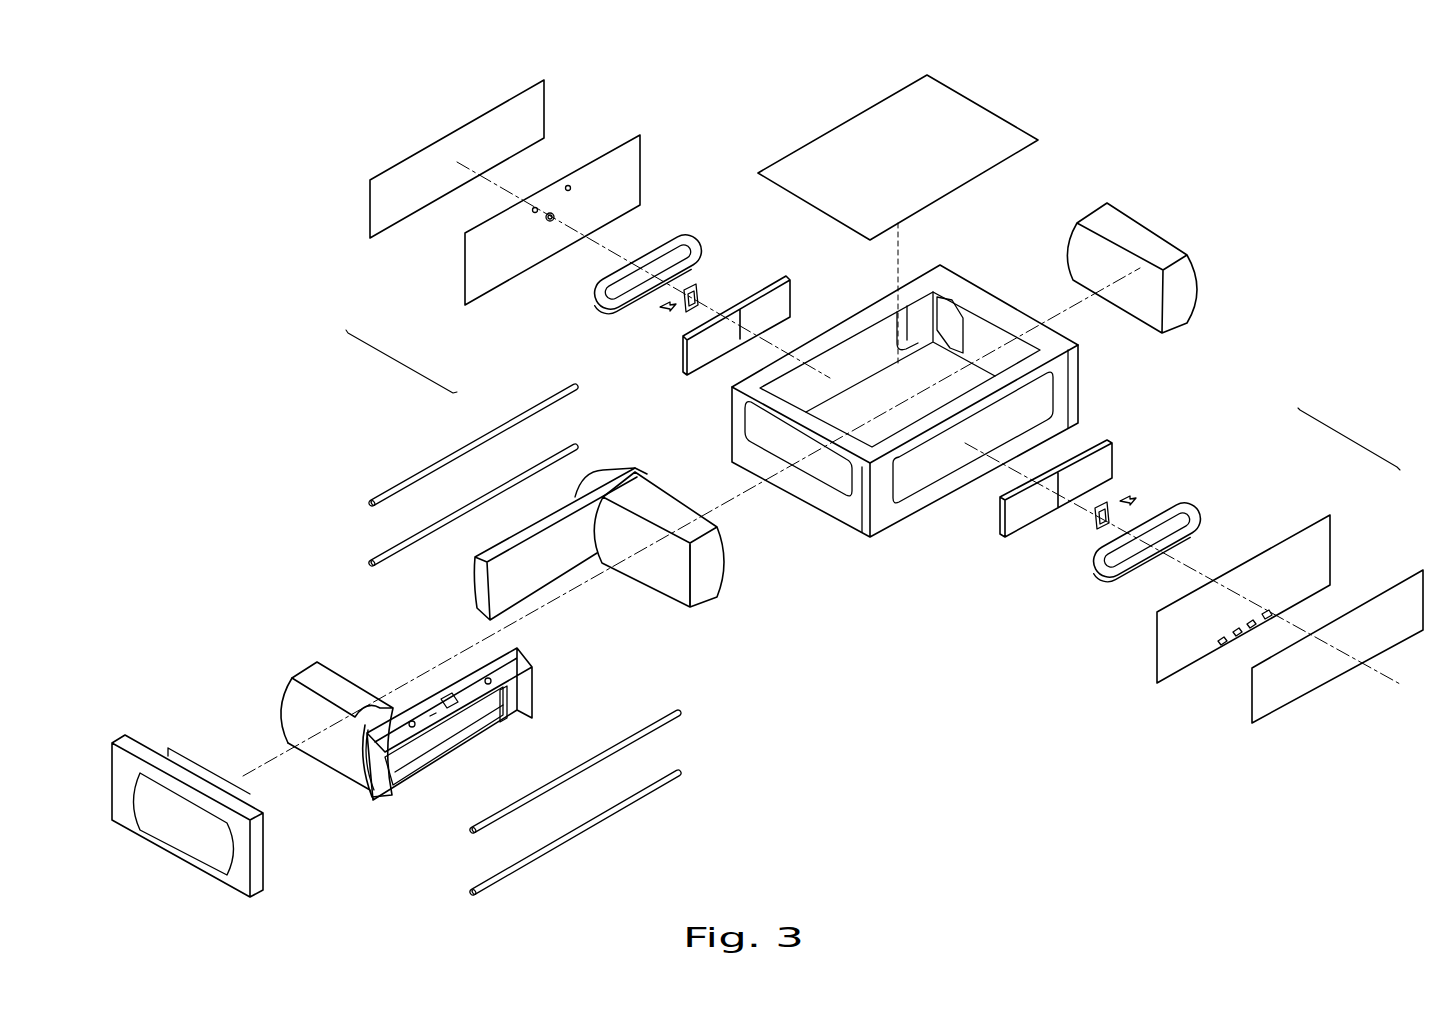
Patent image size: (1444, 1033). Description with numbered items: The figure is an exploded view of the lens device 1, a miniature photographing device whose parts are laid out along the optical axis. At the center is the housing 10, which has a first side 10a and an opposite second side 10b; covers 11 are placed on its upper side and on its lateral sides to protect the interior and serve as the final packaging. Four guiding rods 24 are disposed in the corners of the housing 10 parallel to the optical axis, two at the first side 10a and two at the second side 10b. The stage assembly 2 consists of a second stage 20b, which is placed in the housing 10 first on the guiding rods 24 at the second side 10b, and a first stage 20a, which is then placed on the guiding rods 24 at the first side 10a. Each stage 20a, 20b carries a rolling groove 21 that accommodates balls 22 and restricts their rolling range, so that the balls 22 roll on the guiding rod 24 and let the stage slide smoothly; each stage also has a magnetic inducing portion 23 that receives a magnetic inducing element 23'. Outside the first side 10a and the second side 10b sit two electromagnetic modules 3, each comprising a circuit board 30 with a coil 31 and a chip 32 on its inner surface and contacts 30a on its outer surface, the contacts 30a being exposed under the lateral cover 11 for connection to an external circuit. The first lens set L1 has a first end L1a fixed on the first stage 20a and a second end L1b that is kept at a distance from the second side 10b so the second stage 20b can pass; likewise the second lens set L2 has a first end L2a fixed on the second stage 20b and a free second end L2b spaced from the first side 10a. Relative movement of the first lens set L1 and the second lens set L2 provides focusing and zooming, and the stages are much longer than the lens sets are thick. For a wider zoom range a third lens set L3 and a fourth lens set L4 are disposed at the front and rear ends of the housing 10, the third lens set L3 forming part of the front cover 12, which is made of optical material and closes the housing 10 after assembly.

The lens device 1 is at (207, 70).
The housing 10 is at (855, 405).
The first side 10a is at (933, 490).
The second side 10b is at (743, 410).
The cover 11 is at (405, 165).
The front cover 12 is at (187, 794).
The stage assembly 2 is at (550, 642).
The first stage 20a is at (535, 714).
The second stage 20b is at (543, 567).
The rolling groove 21 is at (412, 720).
The ball 22 is at (510, 692).
The magnetic inducing portion 23 is at (453, 753).
The magnetic inducing element 23' is at (903, 436).
The guiding rod 24 is at (366, 503).
The electromagnetic module 3 is at (401, 364).
The circuit board 30 is at (876, 441).
The contact 30a is at (1227, 647).
The coil 31 is at (593, 298).
The chip 32 is at (665, 307).
The first lens set L1 is at (294, 739).
The first end of the first lens set L1a is at (362, 713).
The second end of the first lens set L1b is at (280, 703).
The second lens set L2 is at (695, 525).
The first end of the second lens set L2a is at (577, 493).
The second end of the second lens set L2b is at (727, 590).
The third lens set L3 is at (180, 830).
The fourth lens set L4 is at (1140, 240).